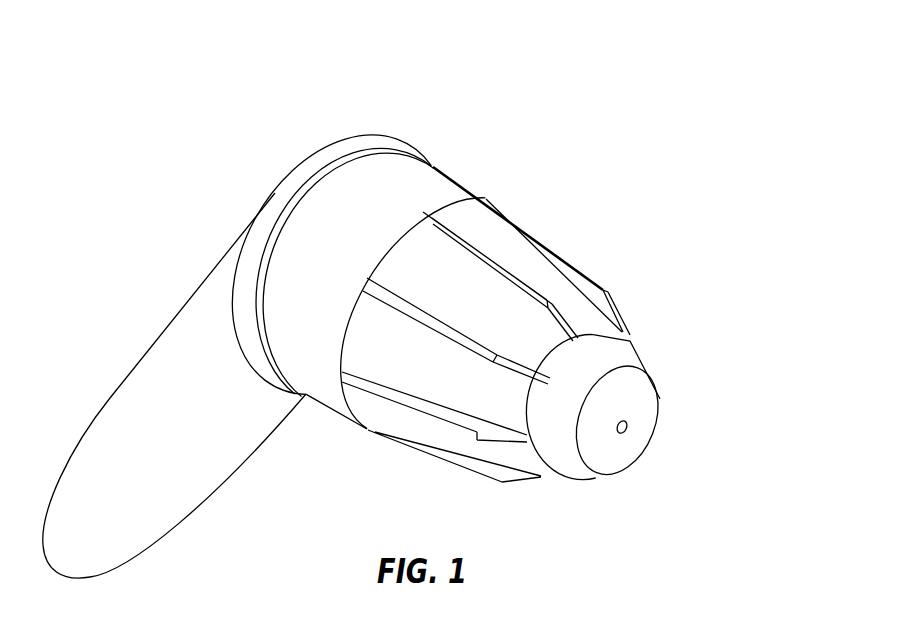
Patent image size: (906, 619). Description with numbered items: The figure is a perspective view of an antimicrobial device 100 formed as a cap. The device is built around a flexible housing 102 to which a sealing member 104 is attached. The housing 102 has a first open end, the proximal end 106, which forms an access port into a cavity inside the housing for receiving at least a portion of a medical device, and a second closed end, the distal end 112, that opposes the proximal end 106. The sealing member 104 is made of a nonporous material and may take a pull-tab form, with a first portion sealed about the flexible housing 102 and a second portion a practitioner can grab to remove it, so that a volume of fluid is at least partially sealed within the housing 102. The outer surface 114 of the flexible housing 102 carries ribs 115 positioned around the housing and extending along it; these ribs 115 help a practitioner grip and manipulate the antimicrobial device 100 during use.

The antimicrobial device 100 is at (172, 70).
The flexible housing 102 is at (292, 312).
The sealing member 104 is at (197, 458).
The proximal end 106 is at (271, 187).
The distal end 112 is at (659, 447).
The outer surface 114 is at (397, 188).
The ribs 115 is at (507, 275).